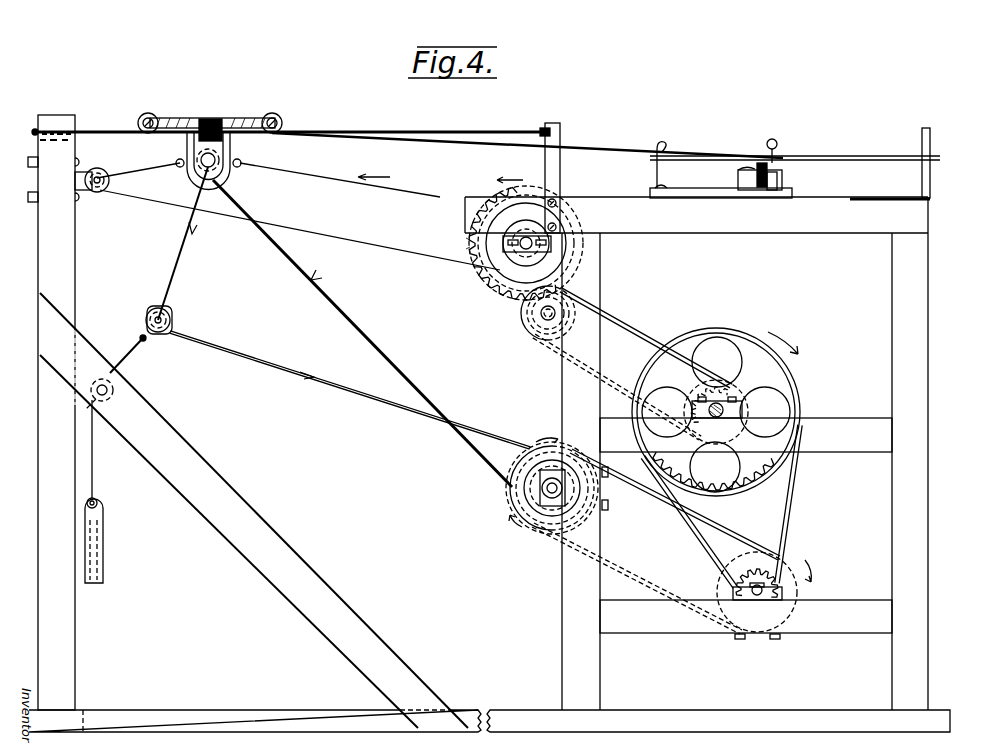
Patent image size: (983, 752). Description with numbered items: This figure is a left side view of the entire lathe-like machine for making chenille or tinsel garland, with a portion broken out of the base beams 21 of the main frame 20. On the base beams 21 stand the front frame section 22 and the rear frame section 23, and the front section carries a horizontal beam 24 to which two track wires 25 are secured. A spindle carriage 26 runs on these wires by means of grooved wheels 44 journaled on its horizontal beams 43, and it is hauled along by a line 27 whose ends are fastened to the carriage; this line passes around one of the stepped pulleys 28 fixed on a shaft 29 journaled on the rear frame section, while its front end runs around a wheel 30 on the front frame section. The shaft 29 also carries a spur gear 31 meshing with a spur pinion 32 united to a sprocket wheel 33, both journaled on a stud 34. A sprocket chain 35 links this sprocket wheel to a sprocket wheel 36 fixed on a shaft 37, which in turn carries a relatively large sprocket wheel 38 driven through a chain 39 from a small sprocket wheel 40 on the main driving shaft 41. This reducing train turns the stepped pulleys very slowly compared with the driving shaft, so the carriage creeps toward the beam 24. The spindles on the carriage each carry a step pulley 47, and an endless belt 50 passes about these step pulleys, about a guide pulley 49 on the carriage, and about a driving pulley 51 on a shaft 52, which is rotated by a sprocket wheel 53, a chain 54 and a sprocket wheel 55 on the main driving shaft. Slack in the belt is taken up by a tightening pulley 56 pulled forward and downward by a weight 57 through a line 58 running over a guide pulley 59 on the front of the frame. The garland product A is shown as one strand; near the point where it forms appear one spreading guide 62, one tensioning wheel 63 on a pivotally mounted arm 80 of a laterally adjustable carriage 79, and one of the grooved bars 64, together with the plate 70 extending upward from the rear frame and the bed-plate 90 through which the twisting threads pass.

The main frame 20 is at (555, 690).
The base beams 21 is at (479, 709).
The front frame section 22 is at (40, 293).
The rear frame section 23 is at (898, 407).
The horizontal beam 24 is at (43, 123).
The track wires 25 is at (116, 131).
The spindle carriage 26 is at (180, 119).
The line 27 is at (441, 200).
The stepped pulleys 28 is at (500, 244).
The shaft 29 is at (518, 268).
The wheel 30 is at (110, 180).
The spur gear 31 is at (500, 290).
The spur pinion 32 is at (540, 313).
The sprocket wheel 33 is at (526, 320).
The stud 34 is at (548, 324).
The sprocket chain 35 is at (562, 343).
The sprocket wheel 36 is at (683, 401).
The shaft 37 is at (716, 412).
The large sprocket wheel 38 is at (740, 482).
The chain 39 is at (792, 490).
The small sprocket wheel 40 is at (757, 575).
The main driving shaft 41 is at (752, 600).
The horizontal beams 43 is at (284, 127).
The wheels 44 is at (281, 119).
The step pulley 47 is at (211, 120).
The guide pulley 49 is at (193, 168).
The belt 50 is at (232, 153).
The driving pulley 51 is at (520, 489).
The shaft 52 is at (545, 496).
The sprocket wheel 53 is at (546, 526).
The chain 54 is at (670, 587).
The sprocket wheel 55 is at (733, 590).
The tightening pulley 56 is at (172, 323).
The weight 57 is at (105, 518).
The line 58 is at (120, 362).
The guide pulley 59 is at (114, 390).
The spreading guide 62 is at (665, 146).
The tensioning wheel 63 is at (782, 152).
The grooved bars 64 is at (840, 158).
The plate 70 is at (931, 145).
The adjustable carriage 79 is at (782, 187).
The pivotally mounted arm 80 is at (778, 166).
The bed-plate 90 is at (724, 192).
The product A is at (455, 153).